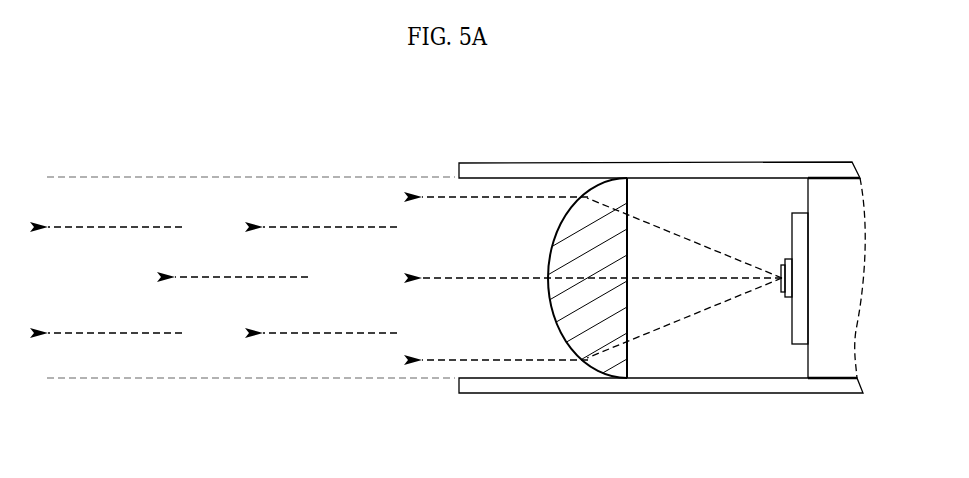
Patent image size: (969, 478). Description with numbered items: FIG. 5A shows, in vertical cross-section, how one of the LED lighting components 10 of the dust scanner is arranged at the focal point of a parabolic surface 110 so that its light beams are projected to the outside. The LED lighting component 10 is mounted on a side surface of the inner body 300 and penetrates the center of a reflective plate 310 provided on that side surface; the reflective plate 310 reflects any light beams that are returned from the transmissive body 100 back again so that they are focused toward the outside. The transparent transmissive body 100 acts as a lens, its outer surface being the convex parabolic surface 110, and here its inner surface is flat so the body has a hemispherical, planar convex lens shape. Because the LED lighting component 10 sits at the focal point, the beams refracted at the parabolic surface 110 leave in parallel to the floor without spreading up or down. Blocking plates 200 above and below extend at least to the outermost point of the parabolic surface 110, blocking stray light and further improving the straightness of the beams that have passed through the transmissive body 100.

The LED lighting component 10 is at (781, 266).
The transmissive body 100 is at (587, 281).
The parabolic surface 110 is at (568, 350).
The blocking plate 200 is at (503, 172).
The inner body 300 is at (835, 190).
The reflective plate 310 is at (799, 330).